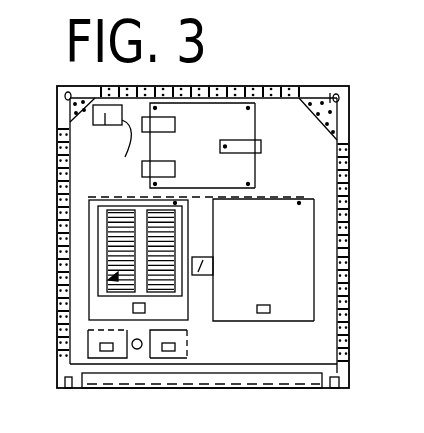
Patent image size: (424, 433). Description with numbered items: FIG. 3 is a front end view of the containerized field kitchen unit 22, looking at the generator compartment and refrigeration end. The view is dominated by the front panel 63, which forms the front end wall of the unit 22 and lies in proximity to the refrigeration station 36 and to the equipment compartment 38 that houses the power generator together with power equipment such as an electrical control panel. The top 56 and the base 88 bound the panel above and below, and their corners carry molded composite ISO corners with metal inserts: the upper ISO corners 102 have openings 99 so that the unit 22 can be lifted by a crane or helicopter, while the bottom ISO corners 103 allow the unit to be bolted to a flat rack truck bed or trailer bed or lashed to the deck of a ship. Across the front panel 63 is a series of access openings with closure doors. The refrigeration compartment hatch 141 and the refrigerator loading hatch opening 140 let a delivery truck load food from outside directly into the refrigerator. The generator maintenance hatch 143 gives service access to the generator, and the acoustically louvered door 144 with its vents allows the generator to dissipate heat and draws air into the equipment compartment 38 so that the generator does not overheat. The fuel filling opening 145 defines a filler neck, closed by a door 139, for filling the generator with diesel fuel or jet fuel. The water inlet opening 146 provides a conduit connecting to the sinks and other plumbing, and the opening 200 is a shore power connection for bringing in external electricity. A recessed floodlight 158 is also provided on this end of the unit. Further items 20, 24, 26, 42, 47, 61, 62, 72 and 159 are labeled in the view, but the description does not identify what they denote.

The cabinet frame 20 is at (57, 97).
The field kitchen unit 22 is at (350, 135).
The left side rail 24 is at (57, 209).
The right side rail inner wall 26 is at (312, 343).
The refrigeration station 36 is at (255, 170).
The equipment compartment 38 is at (88, 303).
The louvered panel 42 is at (98, 241).
The terminal block 47 is at (86, 347).
The top 56 is at (94, 86).
The left rail upper section 61 is at (57, 170).
The right rail lower section 62 is at (347, 300).
The front panel 63 is at (314, 164).
The panel side wall 72 is at (317, 216).
The base 88 is at (82, 388).
The openings 99 is at (343, 97).
The upper ISO corners 102 is at (330, 96).
The bottom ISO corners 103 is at (353, 387).
The door 139 is at (200, 275).
The refrigerator loading hatch opening 140 is at (219, 100).
The refrigeration compartment hatch 141 is at (234, 125).
The generator maintenance hatch 143 is at (294, 261).
The acoustically louvered door 144 is at (112, 276).
The fuel filling opening 145 is at (203, 260).
The water inlet opening 146 is at (187, 348).
The recessed floodlight 158 is at (92, 115).
The bracket 159 is at (105, 125).
The shore power connection opening 200 is at (139, 349).